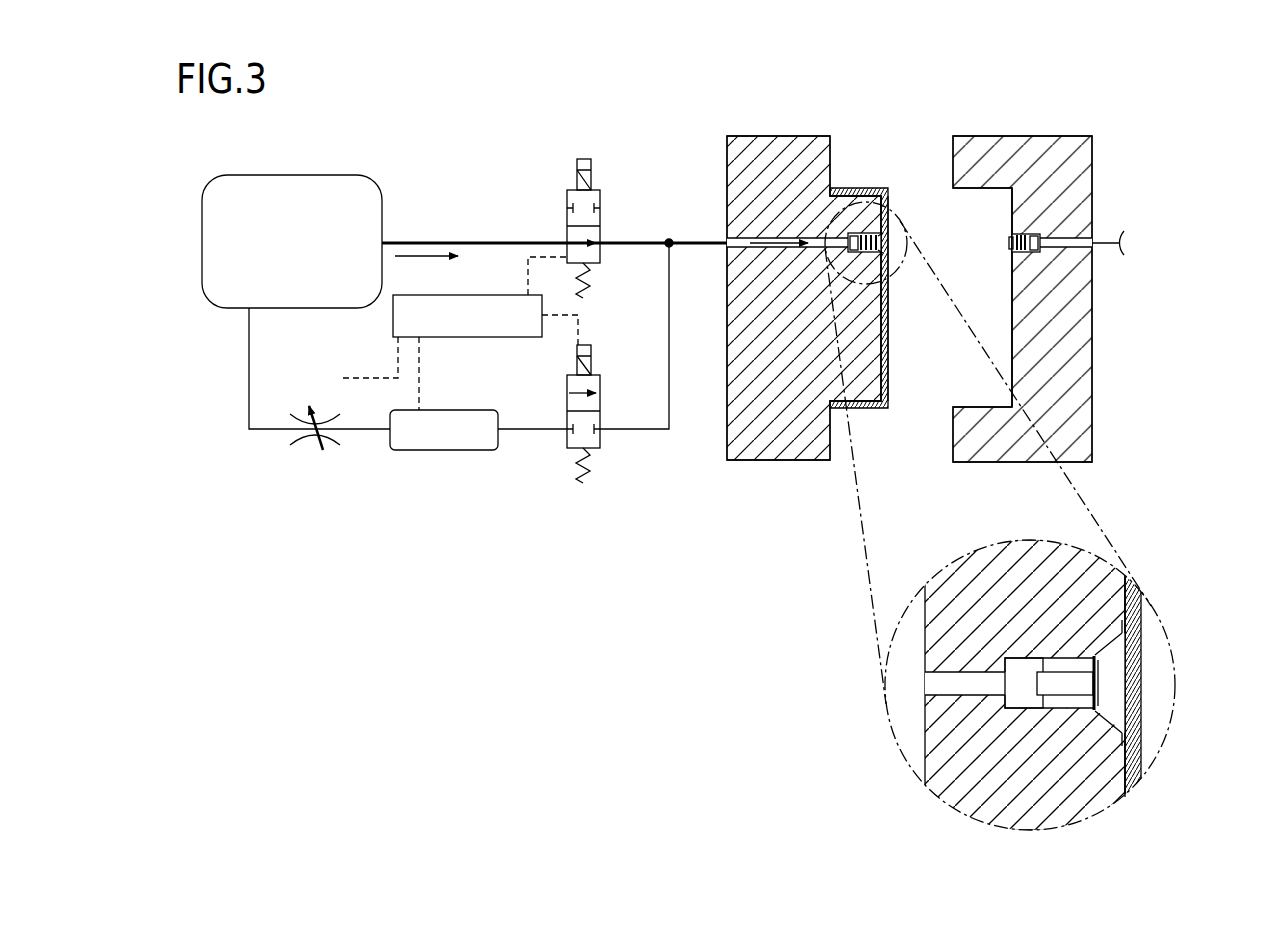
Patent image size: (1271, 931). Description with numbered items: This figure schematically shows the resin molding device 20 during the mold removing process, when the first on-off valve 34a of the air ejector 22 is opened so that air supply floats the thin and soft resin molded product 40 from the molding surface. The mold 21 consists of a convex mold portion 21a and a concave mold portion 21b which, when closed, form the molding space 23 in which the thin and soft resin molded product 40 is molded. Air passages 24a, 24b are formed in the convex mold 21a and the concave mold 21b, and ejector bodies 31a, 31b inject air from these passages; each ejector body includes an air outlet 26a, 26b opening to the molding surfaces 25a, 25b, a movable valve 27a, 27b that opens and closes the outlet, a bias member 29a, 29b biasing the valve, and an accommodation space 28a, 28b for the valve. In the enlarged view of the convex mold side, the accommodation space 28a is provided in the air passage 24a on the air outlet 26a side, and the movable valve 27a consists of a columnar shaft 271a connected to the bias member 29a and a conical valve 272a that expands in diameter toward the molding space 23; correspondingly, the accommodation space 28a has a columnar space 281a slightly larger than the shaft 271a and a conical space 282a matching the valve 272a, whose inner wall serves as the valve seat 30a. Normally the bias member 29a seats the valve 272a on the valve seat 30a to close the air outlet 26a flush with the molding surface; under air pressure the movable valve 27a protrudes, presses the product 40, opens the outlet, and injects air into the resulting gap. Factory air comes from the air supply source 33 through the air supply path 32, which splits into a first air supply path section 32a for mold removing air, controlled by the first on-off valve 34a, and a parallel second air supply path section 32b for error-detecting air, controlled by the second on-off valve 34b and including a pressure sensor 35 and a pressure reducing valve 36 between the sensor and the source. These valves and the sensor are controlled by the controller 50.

The resin molding device 20 is at (1122, 93).
The mold 21 is at (740, 133).
The convex mold portion 21a is at (762, 146).
The concave mold portion 21b is at (1017, 145).
The air ejector 22 is at (524, 150).
The molding space 23 is at (1005, 196).
The air passage 24a is at (742, 240).
The air passage 24b is at (1060, 243).
The molding surface 25a is at (886, 378).
The molding surface 25b is at (1012, 338).
The air outlet 26a is at (880, 243).
The air outlet 26b is at (1012, 249).
The movable valve 27a is at (883, 244).
The movable valve 27b is at (1011, 251).
The accommodation space 28a is at (843, 278).
The columnar space 281a is at (1027, 660).
The columnar shaft 271a is at (1070, 687).
The conical valve 272a is at (1118, 632).
The conical space 282a is at (1104, 656).
The accommodation space 28b is at (1040, 252).
The bias member 29a is at (866, 237).
The bias member 29b is at (1025, 252).
The valve seat 30a is at (1100, 678).
The ejector body 31a is at (855, 225).
The ejector body 31b is at (1041, 230).
The air supply path 32 is at (697, 247).
The first air supply path section 32a is at (521, 240).
The second air supply path section 32b is at (533, 428).
The air supply source 33 is at (348, 175).
The first on-off valve 34a is at (592, 166).
The second on-off valve 34b is at (592, 351).
The pressure sensor 35 is at (448, 409).
The pressure reducing valve 36 is at (327, 415).
The thin and soft resin molded product 40 is at (888, 398).
The controller 50 is at (393, 318).